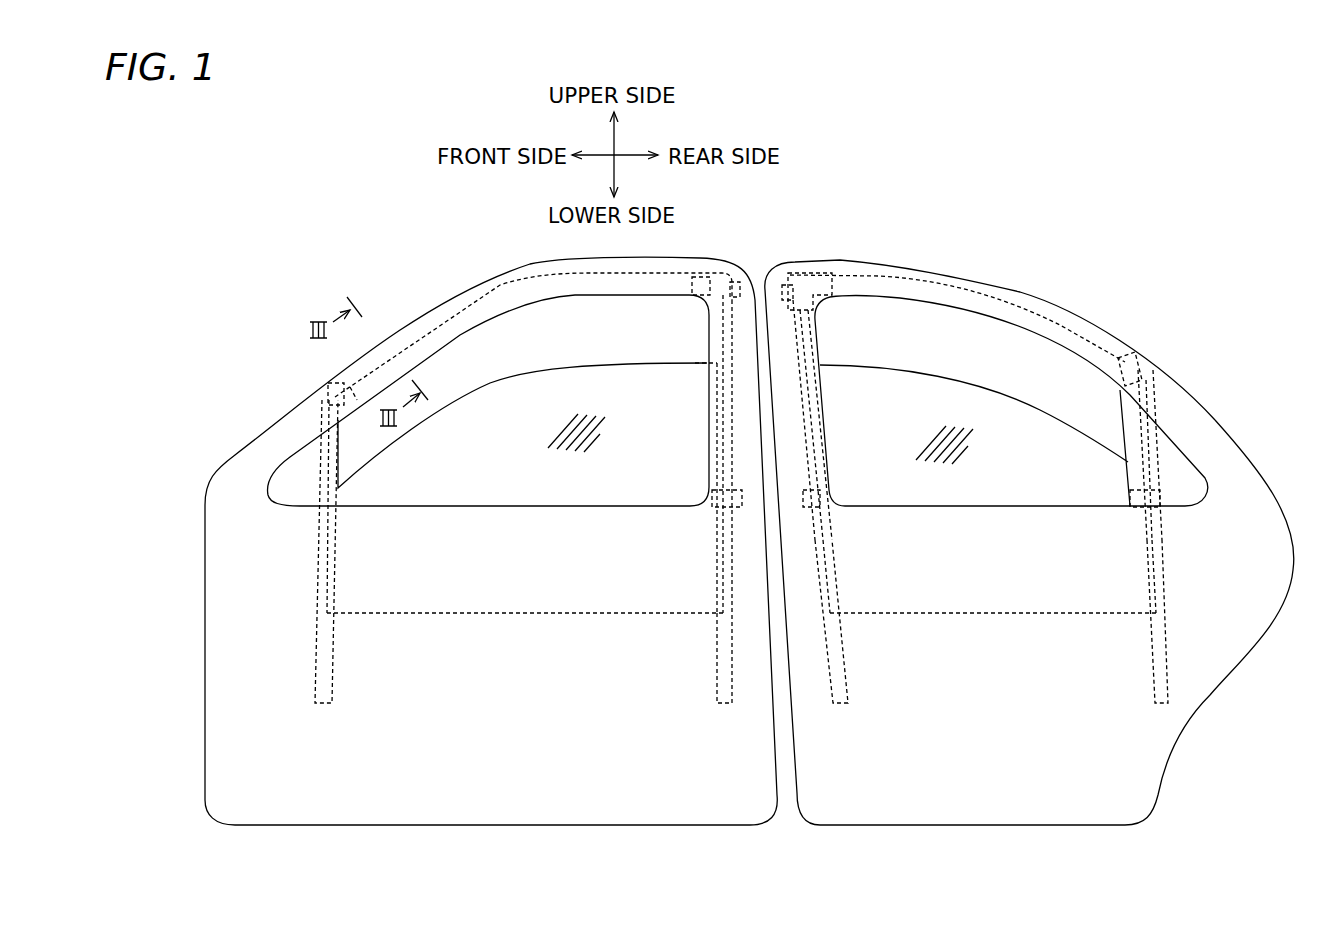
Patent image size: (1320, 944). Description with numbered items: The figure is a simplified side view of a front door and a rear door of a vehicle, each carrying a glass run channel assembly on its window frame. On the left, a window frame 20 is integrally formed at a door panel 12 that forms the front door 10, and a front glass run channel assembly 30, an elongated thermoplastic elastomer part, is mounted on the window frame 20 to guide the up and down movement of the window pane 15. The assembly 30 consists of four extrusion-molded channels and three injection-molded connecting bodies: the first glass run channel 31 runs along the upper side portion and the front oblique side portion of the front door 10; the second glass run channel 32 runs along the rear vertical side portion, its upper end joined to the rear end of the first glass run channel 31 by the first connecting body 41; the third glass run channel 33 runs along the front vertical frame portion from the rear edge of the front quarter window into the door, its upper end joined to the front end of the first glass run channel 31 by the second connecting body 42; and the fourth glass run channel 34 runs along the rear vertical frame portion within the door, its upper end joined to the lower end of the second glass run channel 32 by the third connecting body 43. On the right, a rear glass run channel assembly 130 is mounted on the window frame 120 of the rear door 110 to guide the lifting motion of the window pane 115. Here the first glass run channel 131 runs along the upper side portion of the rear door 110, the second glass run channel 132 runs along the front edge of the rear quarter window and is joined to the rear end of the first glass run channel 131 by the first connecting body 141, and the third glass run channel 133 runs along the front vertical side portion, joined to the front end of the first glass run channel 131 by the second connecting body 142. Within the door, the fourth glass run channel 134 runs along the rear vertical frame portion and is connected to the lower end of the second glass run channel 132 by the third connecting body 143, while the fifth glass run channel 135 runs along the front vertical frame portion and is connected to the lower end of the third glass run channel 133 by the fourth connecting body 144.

The front door 10 is at (266, 403).
The door panel 12 is at (208, 554).
The window pane 15 is at (597, 358).
The window frame 20 is at (520, 288).
The front glass run channel assembly 30 is at (398, 323).
The first glass run channel 31 is at (468, 293).
The second glass run channel 32 is at (716, 433).
The third glass run channel 33 is at (316, 644).
The fourth glass run channel 34 is at (714, 655).
The first connecting body 41 is at (712, 274).
The second connecting body 42 is at (328, 392).
The third connecting body 43 is at (712, 503).
The rear door 110 is at (1203, 396).
The window pane 115 is at (959, 375).
The window frame 120 is at (1059, 352).
The rear glass run channel assembly 130 is at (1028, 303).
The first glass run channel 131 is at (909, 279).
The second glass run channel 132 is at (1150, 447).
The third glass run channel 133 is at (820, 343).
The fourth glass run channel 134 is at (1149, 658).
The fifth glass run channel 135 is at (847, 668).
The first connecting body 141 is at (1128, 365).
The second connecting body 142 is at (813, 302).
The third connecting body 143 is at (1138, 505).
The fourth connecting body 144 is at (825, 505).